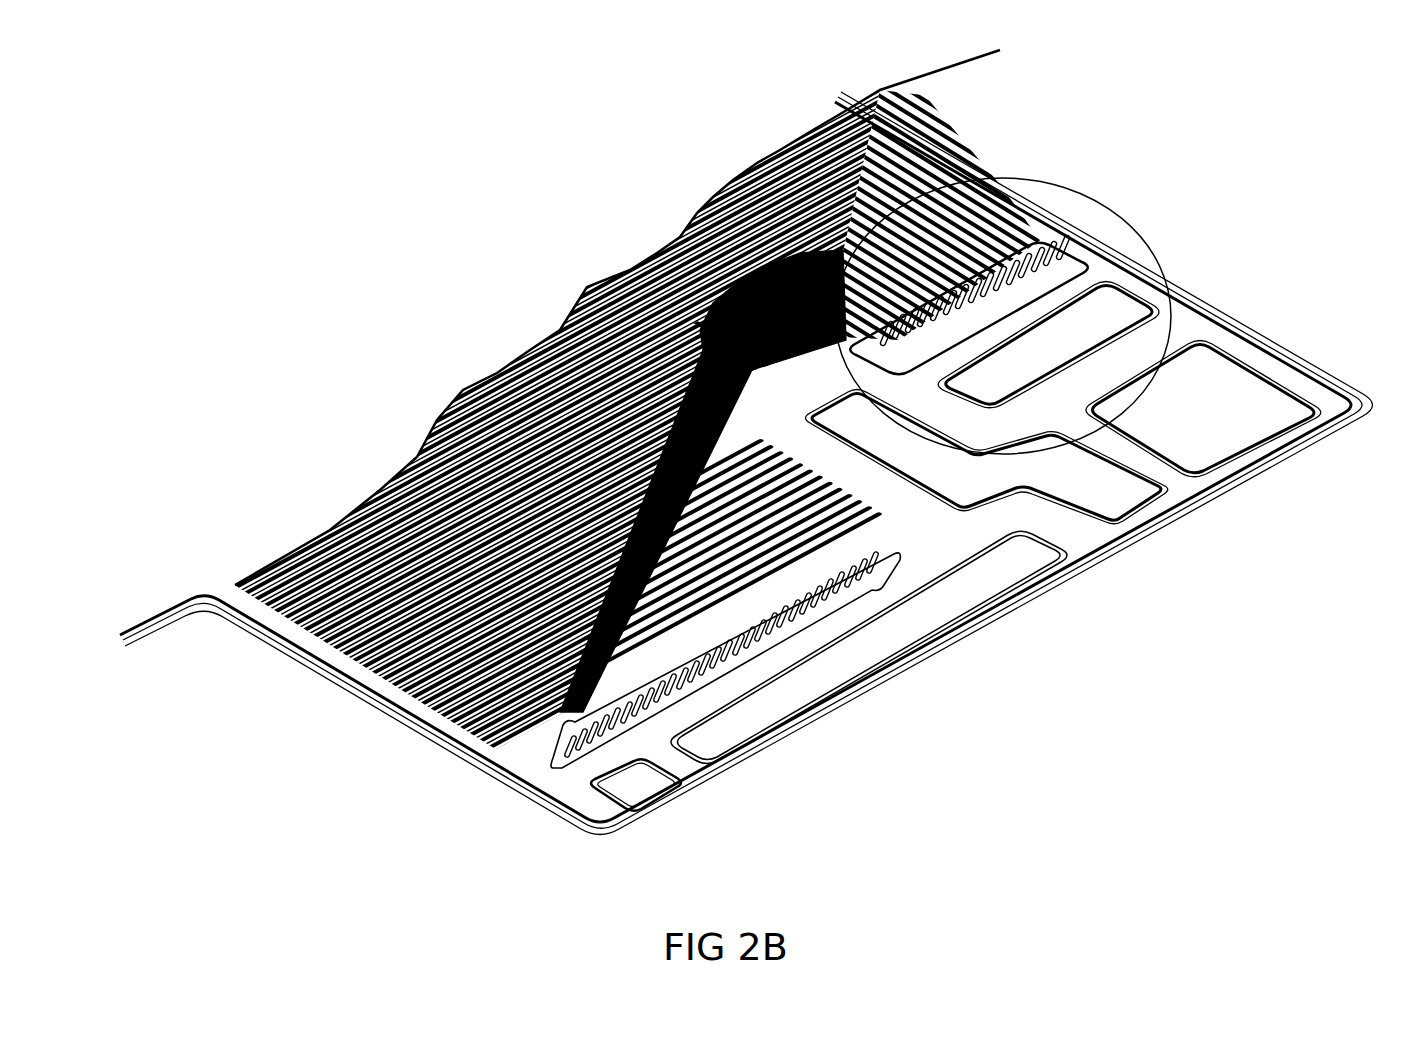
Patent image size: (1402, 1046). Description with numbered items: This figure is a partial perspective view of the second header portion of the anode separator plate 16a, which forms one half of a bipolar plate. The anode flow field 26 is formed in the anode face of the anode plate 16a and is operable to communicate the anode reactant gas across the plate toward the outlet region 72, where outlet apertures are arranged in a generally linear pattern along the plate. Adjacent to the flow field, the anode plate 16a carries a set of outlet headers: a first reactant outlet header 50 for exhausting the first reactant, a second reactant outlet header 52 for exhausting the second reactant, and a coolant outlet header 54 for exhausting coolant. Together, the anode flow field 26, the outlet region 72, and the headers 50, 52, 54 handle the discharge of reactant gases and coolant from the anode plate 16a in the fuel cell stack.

The anode separator plate 16a is at (318, 727).
The anode flow field 26 is at (965, 207).
The outlet region 72 is at (1104, 214).
The second reactant outlet header 52 is at (1110, 312).
The coolant outlet header 54 is at (1115, 498).
The first reactant outlet header 50 is at (895, 638).